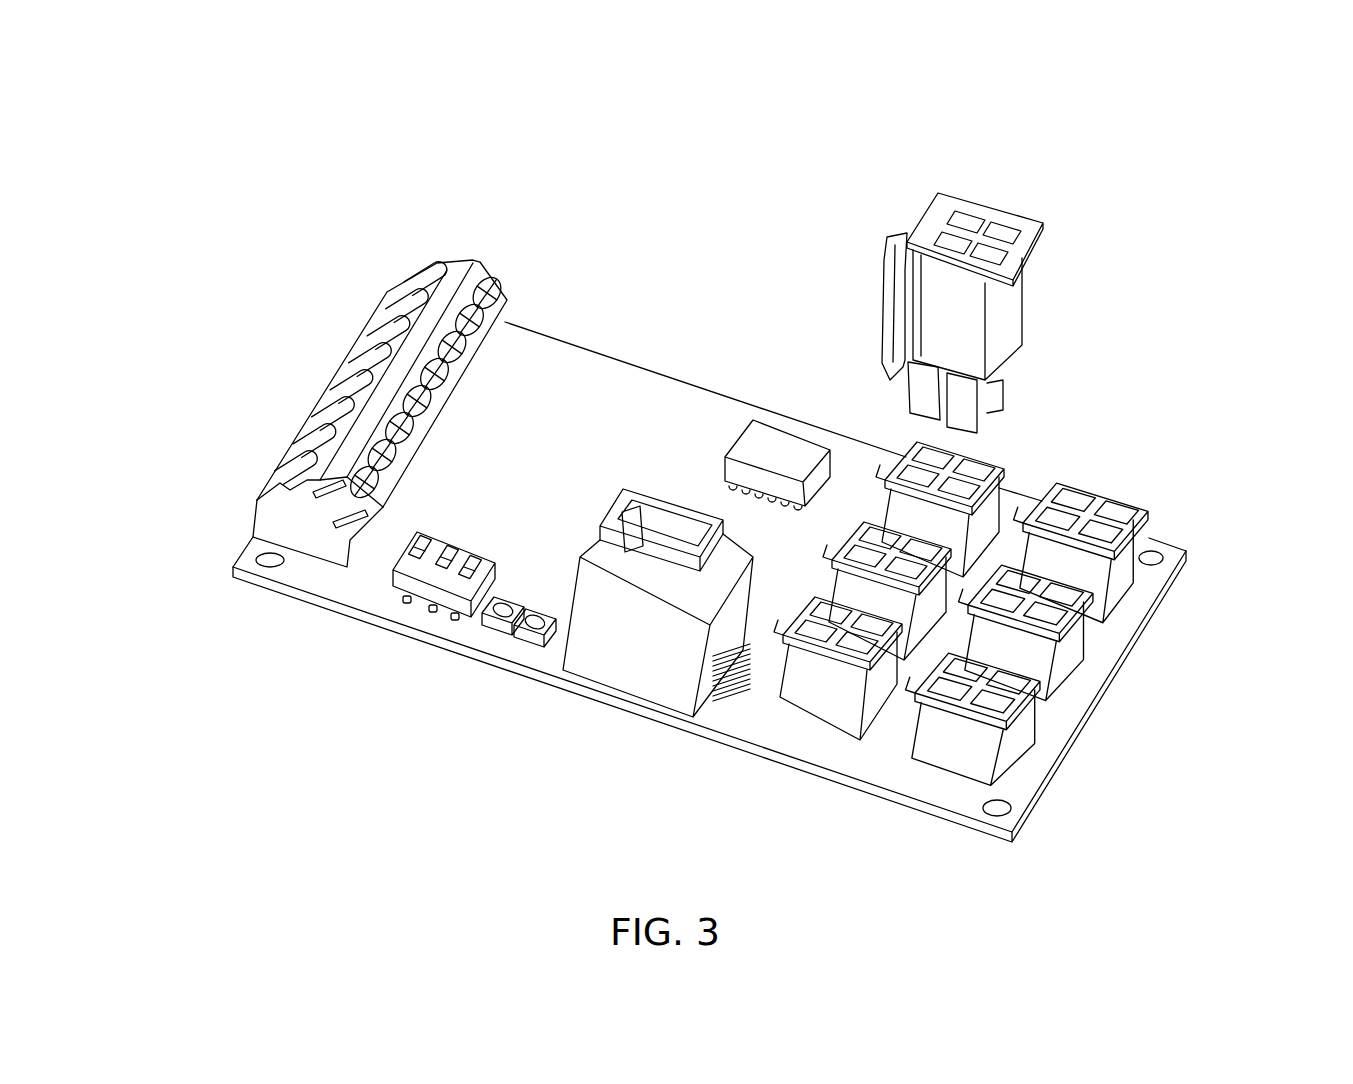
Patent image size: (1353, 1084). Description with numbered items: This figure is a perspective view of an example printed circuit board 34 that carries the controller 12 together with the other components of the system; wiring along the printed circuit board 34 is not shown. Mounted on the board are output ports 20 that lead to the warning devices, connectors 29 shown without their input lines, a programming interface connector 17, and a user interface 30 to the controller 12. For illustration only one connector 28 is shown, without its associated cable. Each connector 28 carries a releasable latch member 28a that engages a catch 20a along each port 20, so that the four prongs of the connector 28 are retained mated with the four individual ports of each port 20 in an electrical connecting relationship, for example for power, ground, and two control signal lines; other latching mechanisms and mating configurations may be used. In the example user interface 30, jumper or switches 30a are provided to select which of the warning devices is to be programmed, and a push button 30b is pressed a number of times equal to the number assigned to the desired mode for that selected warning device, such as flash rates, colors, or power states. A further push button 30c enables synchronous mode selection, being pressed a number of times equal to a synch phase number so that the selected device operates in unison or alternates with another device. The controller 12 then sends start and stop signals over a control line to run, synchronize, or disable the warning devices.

The controller 12 is at (753, 450).
The programming interface connector 17 is at (660, 650).
The output ports 20 is at (1020, 725).
The catch 20a is at (885, 478).
The connector 28 is at (935, 228).
The releasable latch member 28a is at (880, 352).
The connectors 29 is at (397, 283).
The user interface 30 is at (600, 577).
The jumper or switches 30a is at (395, 574).
The push button 30b is at (520, 632).
The push button 30c is at (484, 616).
The printed circuit board 34 is at (1037, 793).